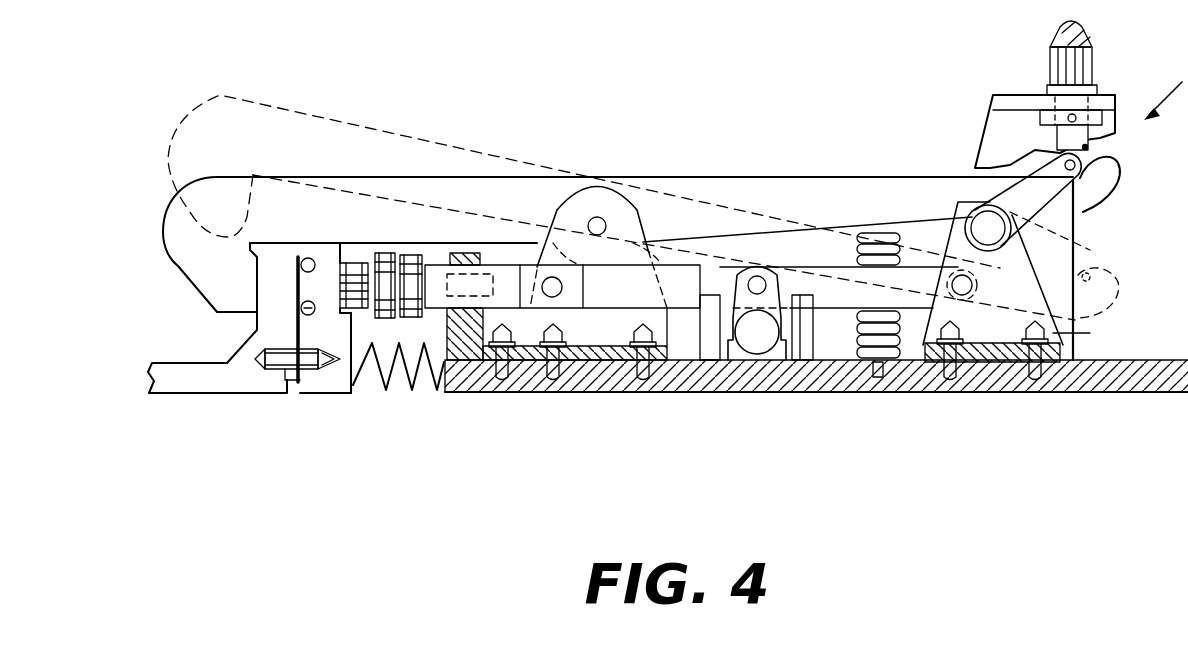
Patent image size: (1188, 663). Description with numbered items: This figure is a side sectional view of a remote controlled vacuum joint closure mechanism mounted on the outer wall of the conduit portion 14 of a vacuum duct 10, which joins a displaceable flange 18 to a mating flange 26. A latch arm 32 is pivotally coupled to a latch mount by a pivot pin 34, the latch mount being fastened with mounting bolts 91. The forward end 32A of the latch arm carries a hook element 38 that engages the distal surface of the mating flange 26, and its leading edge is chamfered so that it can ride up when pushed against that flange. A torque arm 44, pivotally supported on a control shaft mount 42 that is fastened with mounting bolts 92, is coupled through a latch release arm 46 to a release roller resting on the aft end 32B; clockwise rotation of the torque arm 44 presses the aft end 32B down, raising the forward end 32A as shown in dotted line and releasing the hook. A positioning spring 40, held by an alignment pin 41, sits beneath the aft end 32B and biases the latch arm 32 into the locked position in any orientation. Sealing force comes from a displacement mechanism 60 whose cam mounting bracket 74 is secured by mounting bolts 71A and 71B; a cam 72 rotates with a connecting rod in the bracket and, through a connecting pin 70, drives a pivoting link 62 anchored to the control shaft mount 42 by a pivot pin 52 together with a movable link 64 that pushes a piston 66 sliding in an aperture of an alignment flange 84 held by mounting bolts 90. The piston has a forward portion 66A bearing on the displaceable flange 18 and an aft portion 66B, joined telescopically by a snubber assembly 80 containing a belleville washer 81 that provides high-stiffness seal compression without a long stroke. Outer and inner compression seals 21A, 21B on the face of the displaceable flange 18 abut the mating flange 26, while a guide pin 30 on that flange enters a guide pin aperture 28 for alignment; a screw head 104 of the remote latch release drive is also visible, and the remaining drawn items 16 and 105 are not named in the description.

The vacuum duct 10 is at (1158, 400).
The conduit portion 14 is at (1077, 386).
The compression spring 16 is at (392, 388).
The displaceable flange 18 is at (298, 386).
The outer compression seal 21A is at (308, 252).
The inner compression seal 21B is at (302, 305).
The mating flange 26 is at (163, 373).
The guide pin aperture 28 is at (317, 382).
The guide pin 30 is at (300, 374).
The latch arm 32 is at (722, 192).
The forward end of latch arm 32A is at (196, 172).
The aft end of latch arm 32B is at (1117, 167).
The pivot pin 34 is at (595, 224).
The hook element 38 is at (175, 263).
The positioning spring 40 is at (900, 343).
The alignment pin 41 is at (878, 372).
The control shaft mount 42 is at (1092, 333).
The torque arm 44 is at (985, 225).
The latch release arm 46 is at (1056, 210).
The pivot pin 52 is at (960, 296).
The displacement mechanism 60 is at (494, 262).
The pivoting link 62 is at (797, 255).
The movable link 64 is at (657, 243).
The piston 66 is at (363, 252).
The forward portion of piston 66A is at (351, 322).
The aft portion of piston 66B is at (446, 270).
The connecting pin 70 is at (757, 276).
The mounting bolt 71A is at (720, 368).
The mounting bolt 71B is at (812, 362).
The cam 72 is at (768, 342).
The cam mounting bracket 74 is at (717, 297).
The snubber assembly 80 is at (385, 246).
The belleville washer 81 is at (402, 255).
The alignment flange 84 is at (455, 370).
The mounting bolts 90 is at (502, 372).
The mounting bolts 91 is at (558, 368).
The mounting bolts 92 is at (1038, 368).
The screw head 104 is at (1070, 67).
The switch 105 is at (1000, 133).